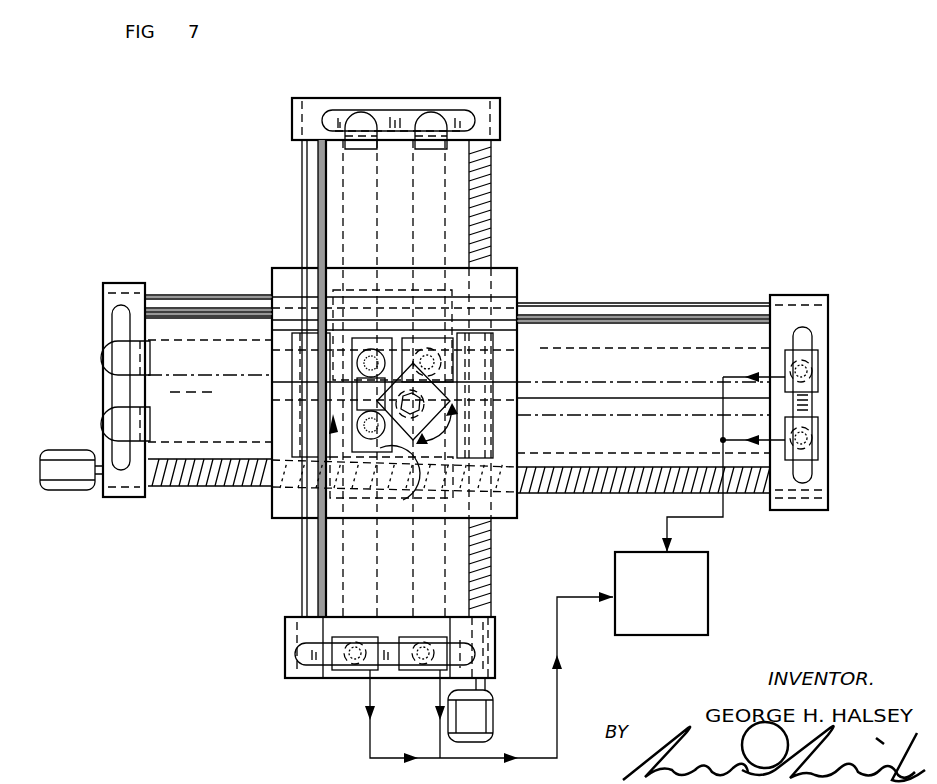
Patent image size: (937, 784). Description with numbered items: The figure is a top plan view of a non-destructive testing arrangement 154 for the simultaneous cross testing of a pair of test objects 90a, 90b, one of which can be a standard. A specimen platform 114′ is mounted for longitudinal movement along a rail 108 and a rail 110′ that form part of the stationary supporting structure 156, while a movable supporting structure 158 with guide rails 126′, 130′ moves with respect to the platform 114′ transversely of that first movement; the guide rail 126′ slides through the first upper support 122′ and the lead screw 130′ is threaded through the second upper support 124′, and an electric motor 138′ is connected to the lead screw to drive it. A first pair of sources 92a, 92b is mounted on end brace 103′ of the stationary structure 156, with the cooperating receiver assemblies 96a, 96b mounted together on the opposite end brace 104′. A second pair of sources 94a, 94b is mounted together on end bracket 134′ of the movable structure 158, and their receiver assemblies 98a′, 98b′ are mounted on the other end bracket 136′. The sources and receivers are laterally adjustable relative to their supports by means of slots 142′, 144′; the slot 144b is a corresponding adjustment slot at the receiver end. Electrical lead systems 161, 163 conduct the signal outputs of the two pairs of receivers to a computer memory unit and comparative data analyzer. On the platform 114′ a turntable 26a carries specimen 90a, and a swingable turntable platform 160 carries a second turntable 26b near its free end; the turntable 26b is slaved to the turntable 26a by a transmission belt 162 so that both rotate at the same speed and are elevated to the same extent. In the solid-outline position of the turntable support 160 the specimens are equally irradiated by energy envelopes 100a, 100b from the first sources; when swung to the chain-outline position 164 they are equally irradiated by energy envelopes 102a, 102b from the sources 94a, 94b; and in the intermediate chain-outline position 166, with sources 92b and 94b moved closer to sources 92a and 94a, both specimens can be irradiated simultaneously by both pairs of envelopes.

The non-destructive testing arrangement 154 is at (618, 246).
The turntable 26a is at (372, 346).
The turntable 26b is at (353, 446).
The test object 90a is at (395, 343).
The test object 90b is at (370, 427).
The turntable platform 160 is at (406, 490).
The movable supporting structure 158 is at (500, 128).
The source 94a is at (358, 118).
The source 94b is at (435, 122).
The slot 144′ is at (387, 115).
The end bracket 134′ is at (400, 98).
The energy envelope 102a is at (350, 197).
The energy envelope 102b is at (438, 210).
The guide rail 126′ is at (302, 572).
The lead screw 130′ is at (488, 542).
The end bracket 136′ is at (490, 663).
The receiver assembly 98a′ is at (330, 673).
The receiver assembly 98b′ is at (410, 672).
The slot 144b is at (388, 660).
The electric motor 138′ is at (493, 717).
The electrical lead system 161 is at (553, 612).
The chain-outline position 164 is at (698, 586).
The electrical lead system 163 is at (722, 420).
The rail 108 is at (173, 300).
The energy envelope 100a is at (175, 348).
The energy envelope 100b is at (195, 432).
The transmission belt 162 is at (300, 400).
The first upper support 122′ is at (300, 416).
The specimen platform 114′ is at (505, 303).
The chain-outline intermediate position 166 is at (643, 390).
The second upper support 124′ is at (500, 443).
The rail 110′ is at (163, 485).
The end brace 103′ is at (102, 380).
The stationary supporting structure 156 is at (132, 495).
The source 92a is at (118, 352).
The source 92b is at (118, 417).
The end brace 104′ is at (822, 480).
The receiver assembly 96a is at (818, 352).
The receiver assembly 96b is at (818, 425).
The slot 142′ is at (805, 398).